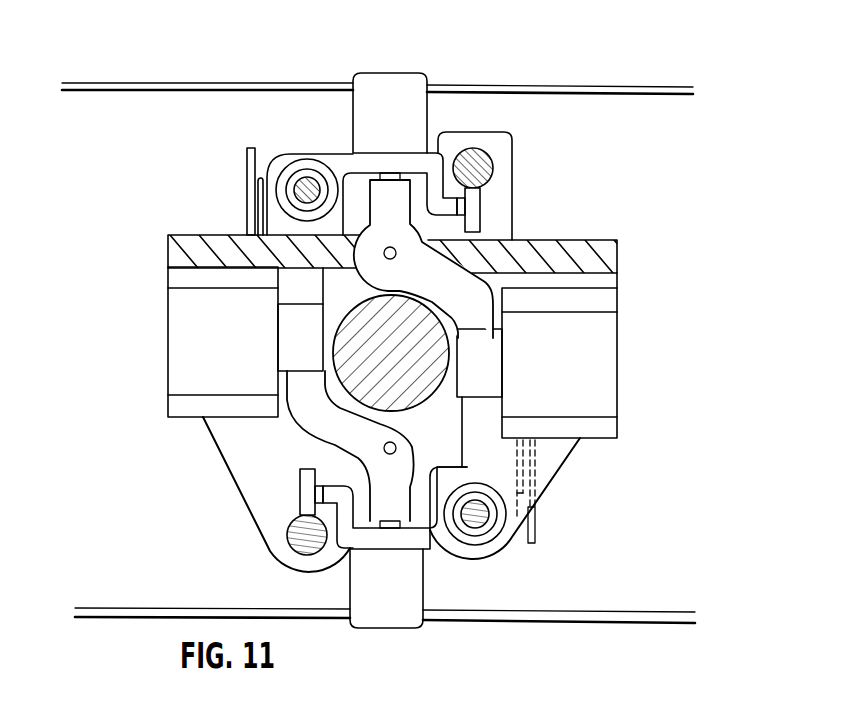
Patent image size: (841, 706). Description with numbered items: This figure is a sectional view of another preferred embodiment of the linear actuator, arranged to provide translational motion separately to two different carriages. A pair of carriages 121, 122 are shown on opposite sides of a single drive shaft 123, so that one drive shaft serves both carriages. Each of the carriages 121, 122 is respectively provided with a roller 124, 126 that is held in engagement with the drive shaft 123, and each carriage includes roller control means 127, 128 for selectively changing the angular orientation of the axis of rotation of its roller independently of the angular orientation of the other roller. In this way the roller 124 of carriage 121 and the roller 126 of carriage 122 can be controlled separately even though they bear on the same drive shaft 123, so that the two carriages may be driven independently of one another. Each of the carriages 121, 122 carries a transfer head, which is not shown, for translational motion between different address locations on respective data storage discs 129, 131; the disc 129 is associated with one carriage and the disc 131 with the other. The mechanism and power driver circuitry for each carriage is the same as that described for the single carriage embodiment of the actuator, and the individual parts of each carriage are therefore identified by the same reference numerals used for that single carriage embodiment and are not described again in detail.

The carriage 121 is at (399, 66).
The carriage 122 is at (408, 641).
The drive shaft 123 is at (360, 323).
The roller 124 is at (358, 251).
The roller 126 is at (418, 448).
The roller control means 127 is at (648, 321).
The roller control means 128 is at (150, 317).
The data storage disc 129 is at (582, 86).
The data storage disc 131 is at (545, 625).